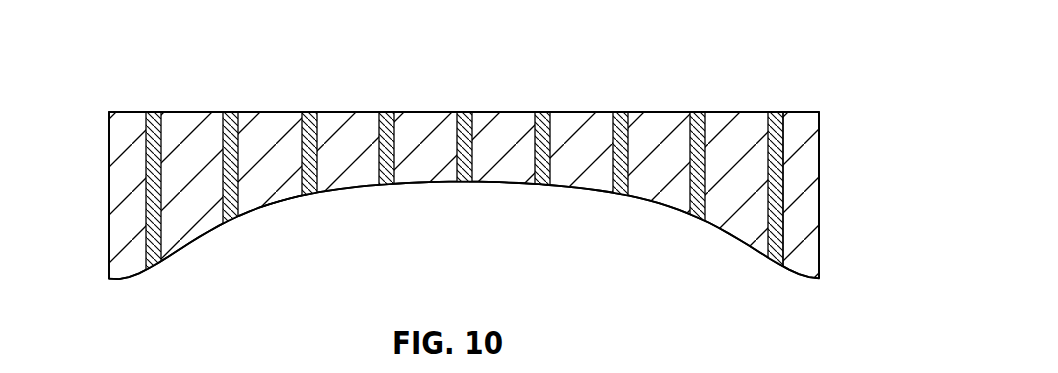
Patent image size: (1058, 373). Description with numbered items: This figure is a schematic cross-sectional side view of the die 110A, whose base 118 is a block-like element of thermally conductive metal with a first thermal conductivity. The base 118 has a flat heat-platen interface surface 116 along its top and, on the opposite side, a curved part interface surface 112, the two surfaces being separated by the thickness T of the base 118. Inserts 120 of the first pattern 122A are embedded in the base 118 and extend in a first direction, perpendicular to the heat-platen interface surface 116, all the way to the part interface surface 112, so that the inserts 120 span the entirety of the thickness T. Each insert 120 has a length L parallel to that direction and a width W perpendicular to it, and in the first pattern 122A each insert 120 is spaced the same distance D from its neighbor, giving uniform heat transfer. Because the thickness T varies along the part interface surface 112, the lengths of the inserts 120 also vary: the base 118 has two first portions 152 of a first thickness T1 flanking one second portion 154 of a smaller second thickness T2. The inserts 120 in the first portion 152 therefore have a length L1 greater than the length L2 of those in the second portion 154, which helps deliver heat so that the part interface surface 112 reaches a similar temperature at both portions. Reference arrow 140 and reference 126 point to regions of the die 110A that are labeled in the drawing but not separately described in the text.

The die 110A is at (824, 148).
The part interface surface 112 is at (290, 203).
The heat-platen interface surface 116 is at (175, 112).
The base 118 is at (820, 257).
The inserts 120 is at (228, 176).
The first pattern 122A is at (806, 105).
The channel wall 126 is at (790, 182).
The article 140 is at (112, 243).
The first portion 152 is at (201, 248).
The second portion 154 is at (523, 194).
The length of inserts in first portion L1 is at (152, 300).
The length of inserts in second portion L2 is at (463, 212).
The length L is at (619, 196).
The thickness T is at (430, 212).
The first thickness T1 is at (751, 112).
The second thickness T2 is at (397, 212).
The width W is at (348, 128).
The distance D is at (627, 207).